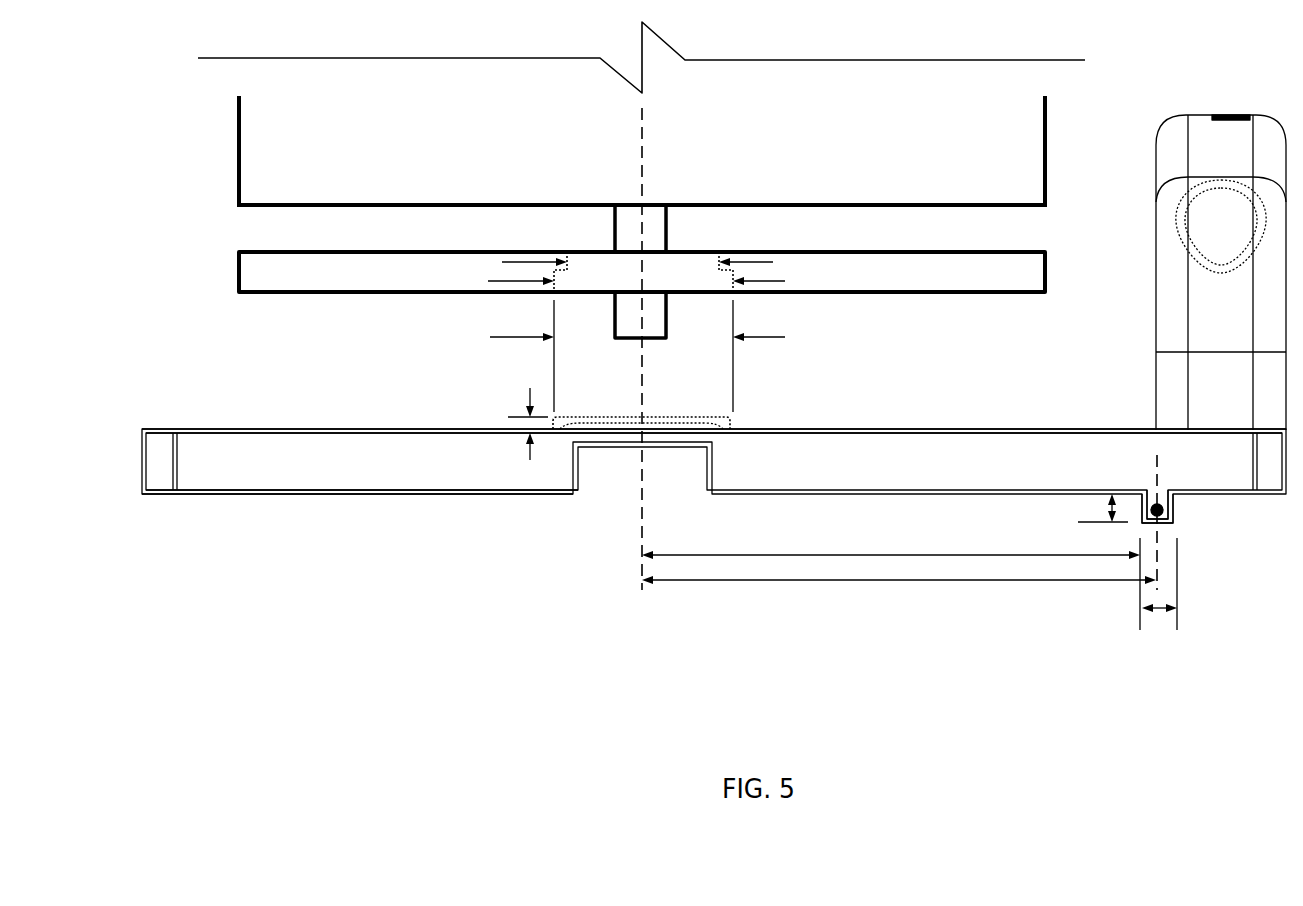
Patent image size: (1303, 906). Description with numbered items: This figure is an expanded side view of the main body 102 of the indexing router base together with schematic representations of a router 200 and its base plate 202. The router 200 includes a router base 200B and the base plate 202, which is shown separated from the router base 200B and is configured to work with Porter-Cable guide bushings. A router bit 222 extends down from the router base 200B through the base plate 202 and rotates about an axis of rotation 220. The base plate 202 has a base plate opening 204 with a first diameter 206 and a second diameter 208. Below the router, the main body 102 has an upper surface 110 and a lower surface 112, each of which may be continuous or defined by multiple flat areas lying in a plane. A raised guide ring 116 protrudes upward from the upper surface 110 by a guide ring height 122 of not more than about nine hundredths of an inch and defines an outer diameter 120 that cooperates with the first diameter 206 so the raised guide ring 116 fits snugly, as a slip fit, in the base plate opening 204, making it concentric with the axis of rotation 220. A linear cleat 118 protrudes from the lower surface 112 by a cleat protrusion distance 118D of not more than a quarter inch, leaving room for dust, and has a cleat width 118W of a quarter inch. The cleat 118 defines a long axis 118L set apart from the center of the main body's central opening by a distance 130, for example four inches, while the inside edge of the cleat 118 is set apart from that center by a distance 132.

The router 200 is at (304, 129).
The router base 200B is at (320, 185).
The base plate 202 is at (239, 273).
The base plate opening 204 is at (690, 236).
The first diameter 206 is at (762, 278).
The second diameter 208 is at (752, 262).
The axis of rotation 220 is at (643, 157).
The router bit 222 is at (613, 228).
The outer diameter 120 is at (520, 335).
The guide ring height 122 is at (528, 392).
The raised guide ring 116 is at (730, 423).
The main body 102 is at (163, 451).
The upper surface 110 is at (262, 430).
The lower surface 112 is at (258, 493).
The cleat 118 is at (1168, 523).
The cleat protrusion distance 118D is at (1106, 510).
The long axis 118L is at (1163, 512).
The cleat width 118W is at (1158, 612).
The distance 130 is at (920, 580).
The distance 132 is at (880, 555).